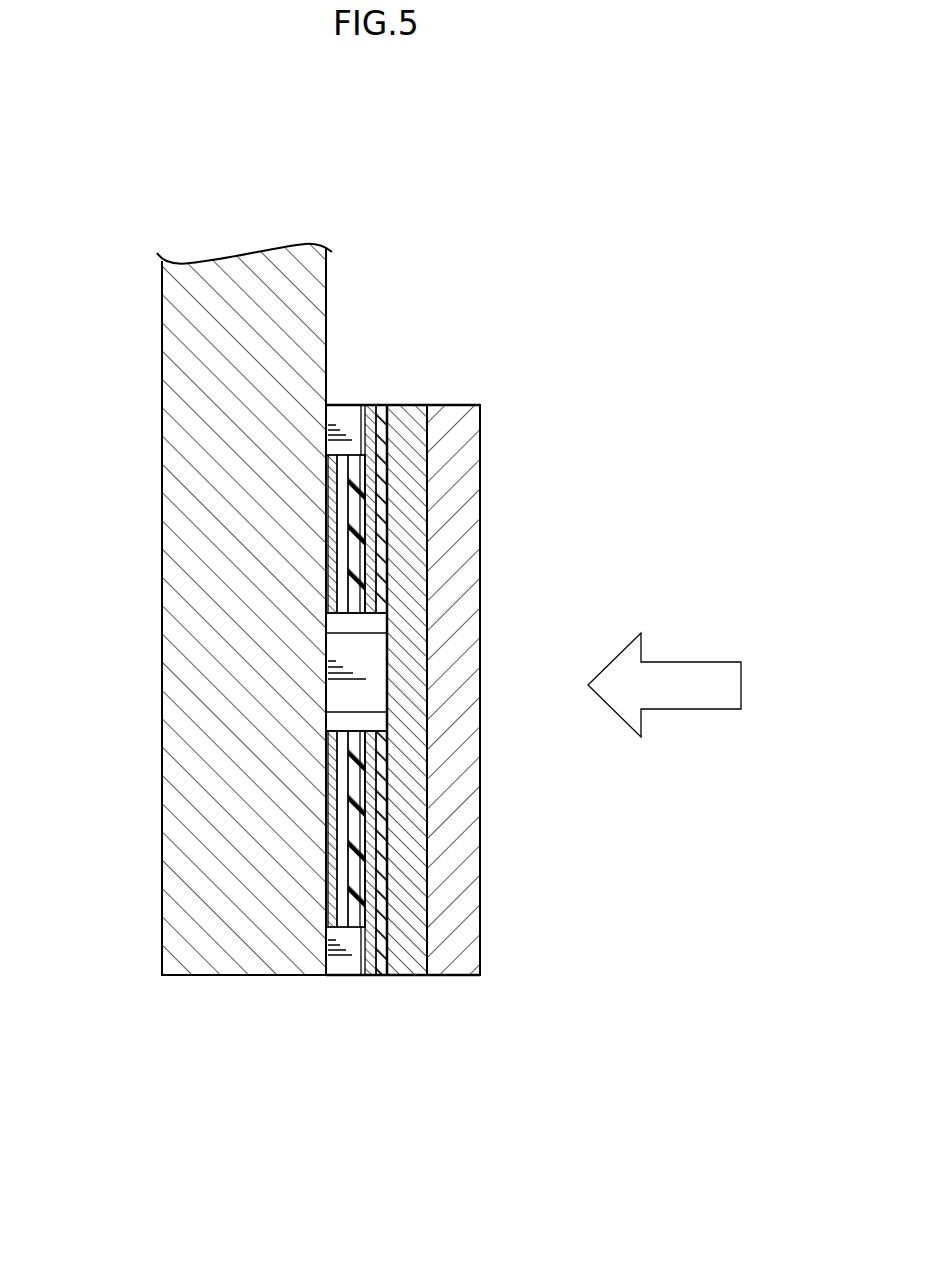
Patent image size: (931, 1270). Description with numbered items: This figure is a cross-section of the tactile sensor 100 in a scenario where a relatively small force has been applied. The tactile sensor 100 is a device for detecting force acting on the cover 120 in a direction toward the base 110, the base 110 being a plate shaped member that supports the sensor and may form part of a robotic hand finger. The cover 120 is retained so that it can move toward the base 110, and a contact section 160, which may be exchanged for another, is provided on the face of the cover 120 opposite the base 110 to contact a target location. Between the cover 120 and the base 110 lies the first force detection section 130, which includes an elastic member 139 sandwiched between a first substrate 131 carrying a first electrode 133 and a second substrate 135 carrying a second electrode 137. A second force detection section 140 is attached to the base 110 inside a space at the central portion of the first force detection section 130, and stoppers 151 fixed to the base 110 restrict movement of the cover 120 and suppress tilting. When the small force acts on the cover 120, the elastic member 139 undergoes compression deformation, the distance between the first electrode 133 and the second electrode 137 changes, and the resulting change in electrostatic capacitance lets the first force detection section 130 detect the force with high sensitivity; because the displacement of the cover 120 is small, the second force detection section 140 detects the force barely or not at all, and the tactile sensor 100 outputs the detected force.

The tactile sensor 100 is at (702, 350).
The base 110 is at (162, 313).
The cover 120 is at (406, 410).
The first force detection section 130 is at (552, 218).
The first substrate 131 is at (386, 408).
The first electrode 133 is at (379, 408).
The second substrate 135 is at (344, 455).
The second electrode 137 is at (359, 455).
The elastic member 139 is at (370, 455).
The second force detection section 140 is at (372, 690).
The stopper 151 is at (339, 448).
The contact section 160 is at (463, 487).